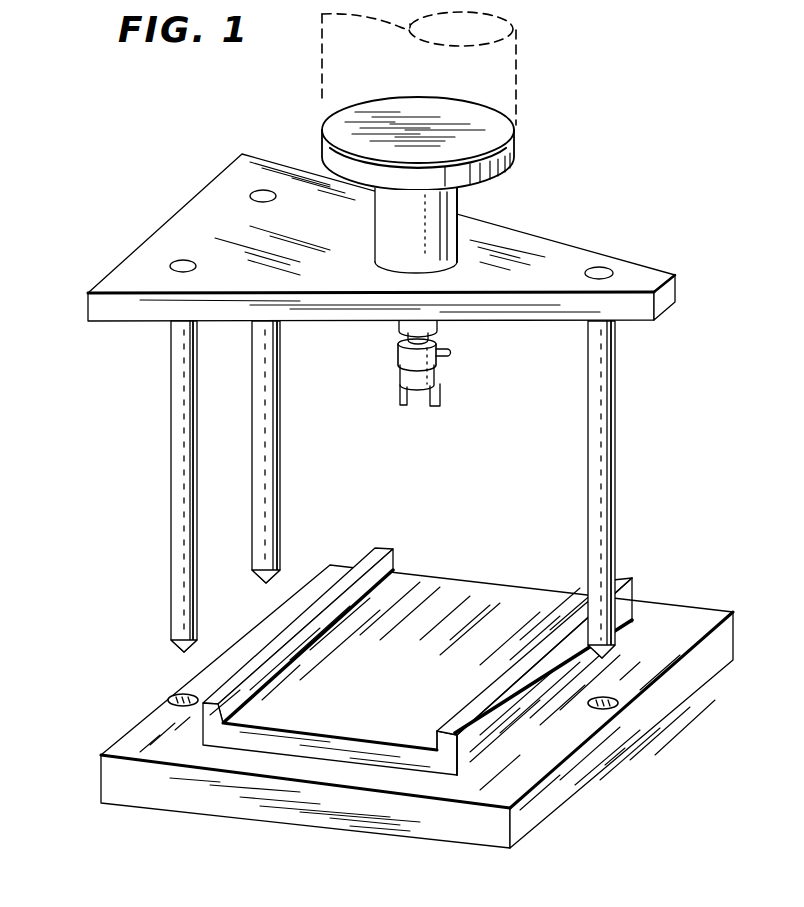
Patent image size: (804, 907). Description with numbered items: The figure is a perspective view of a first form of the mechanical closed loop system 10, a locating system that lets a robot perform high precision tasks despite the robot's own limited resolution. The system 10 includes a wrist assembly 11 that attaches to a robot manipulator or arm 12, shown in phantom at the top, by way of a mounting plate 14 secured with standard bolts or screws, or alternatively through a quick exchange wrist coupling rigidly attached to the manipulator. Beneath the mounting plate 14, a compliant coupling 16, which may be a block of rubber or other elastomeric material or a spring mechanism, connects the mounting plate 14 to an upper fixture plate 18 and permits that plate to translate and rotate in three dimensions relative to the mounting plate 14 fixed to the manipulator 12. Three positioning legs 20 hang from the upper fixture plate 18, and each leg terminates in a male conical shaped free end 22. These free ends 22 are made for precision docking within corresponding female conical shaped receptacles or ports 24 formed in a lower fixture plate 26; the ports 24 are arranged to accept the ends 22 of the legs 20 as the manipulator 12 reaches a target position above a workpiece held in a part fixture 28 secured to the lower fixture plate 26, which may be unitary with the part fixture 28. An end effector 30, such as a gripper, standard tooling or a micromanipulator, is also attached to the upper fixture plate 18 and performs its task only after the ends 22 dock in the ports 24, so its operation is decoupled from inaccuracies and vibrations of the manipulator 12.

The mechanical closed loop system 10 is at (105, 246).
The wrist assembly 11 is at (662, 105).
The robot manipulator or arm 12 is at (518, 62).
The mounting plate 14 is at (328, 150).
The compliant coupling 16 is at (458, 199).
The upper fixture plate 18 is at (560, 258).
The positioning legs 20 is at (258, 456).
The male conical shaped free end 22 is at (190, 650).
The female conical shaped receptacles or ports 24 is at (182, 698).
The lower fixture plate 26 is at (668, 612).
The part fixture 28 is at (413, 677).
The end effector 30 is at (381, 368).